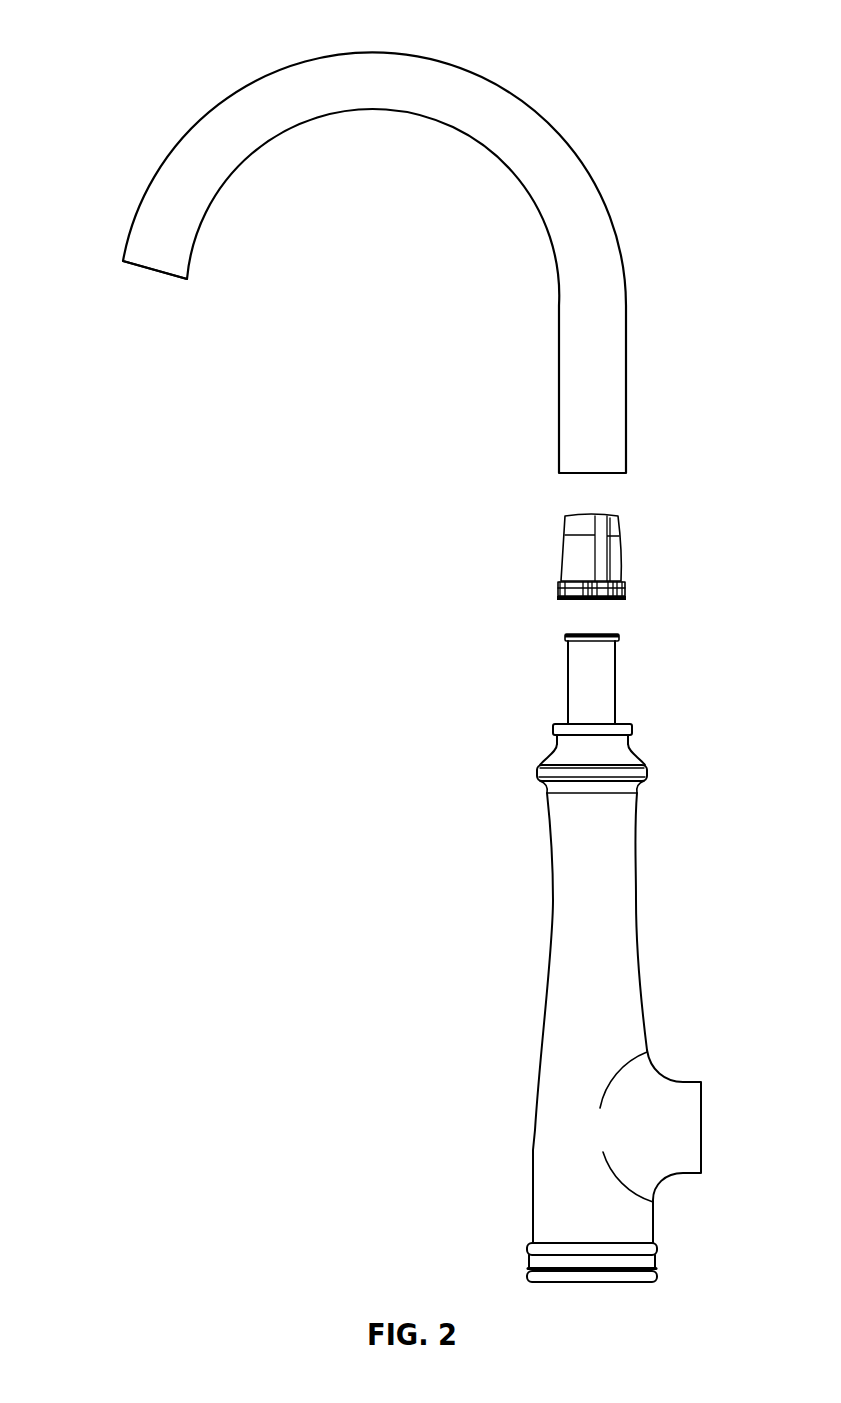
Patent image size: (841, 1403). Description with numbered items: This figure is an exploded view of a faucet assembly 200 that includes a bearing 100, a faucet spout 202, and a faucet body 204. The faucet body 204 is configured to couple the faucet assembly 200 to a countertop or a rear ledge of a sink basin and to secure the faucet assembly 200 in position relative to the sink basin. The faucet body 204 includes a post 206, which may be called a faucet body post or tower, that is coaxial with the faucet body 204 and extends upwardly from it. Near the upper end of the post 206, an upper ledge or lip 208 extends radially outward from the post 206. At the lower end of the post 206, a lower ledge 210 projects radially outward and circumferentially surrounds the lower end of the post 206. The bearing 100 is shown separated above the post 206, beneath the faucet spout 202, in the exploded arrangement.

The faucet assembly 200 is at (146, 40).
The faucet spout 202 is at (548, 342).
The bearing 100 is at (547, 562).
The faucet body 204 is at (524, 1056).
The post 206 is at (556, 685).
The upper ledge or lip 208 is at (618, 640).
The lower ledge 210 is at (627, 728).